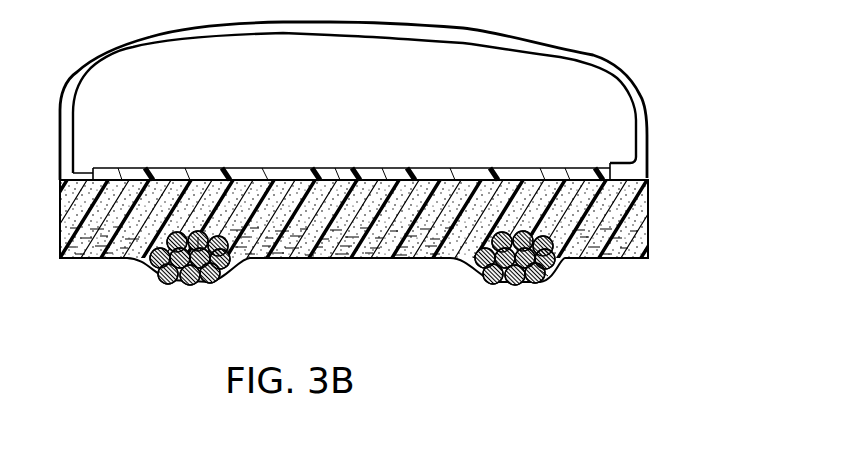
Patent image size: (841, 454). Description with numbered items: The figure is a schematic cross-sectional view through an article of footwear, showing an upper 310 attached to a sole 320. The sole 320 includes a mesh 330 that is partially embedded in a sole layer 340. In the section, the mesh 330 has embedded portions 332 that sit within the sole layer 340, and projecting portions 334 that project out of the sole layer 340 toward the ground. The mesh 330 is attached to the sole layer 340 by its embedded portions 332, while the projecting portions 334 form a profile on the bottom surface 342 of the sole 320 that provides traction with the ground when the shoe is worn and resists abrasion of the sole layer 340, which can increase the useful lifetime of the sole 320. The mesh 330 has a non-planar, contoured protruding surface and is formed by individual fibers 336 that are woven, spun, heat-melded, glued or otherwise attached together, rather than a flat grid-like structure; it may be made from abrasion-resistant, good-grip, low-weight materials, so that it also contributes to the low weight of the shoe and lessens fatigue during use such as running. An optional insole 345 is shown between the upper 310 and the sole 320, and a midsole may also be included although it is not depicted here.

The upper 310 is at (622, 68).
The sole 320 is at (649, 215).
The mesh 330 is at (342, 284).
The embedded portions 332 is at (198, 237).
The projecting portions 334 is at (155, 282).
The individual fibers 336 is at (500, 285).
The sole layer 340 is at (648, 240).
The bottom surface 342 is at (612, 260).
The insole 345 is at (100, 173).